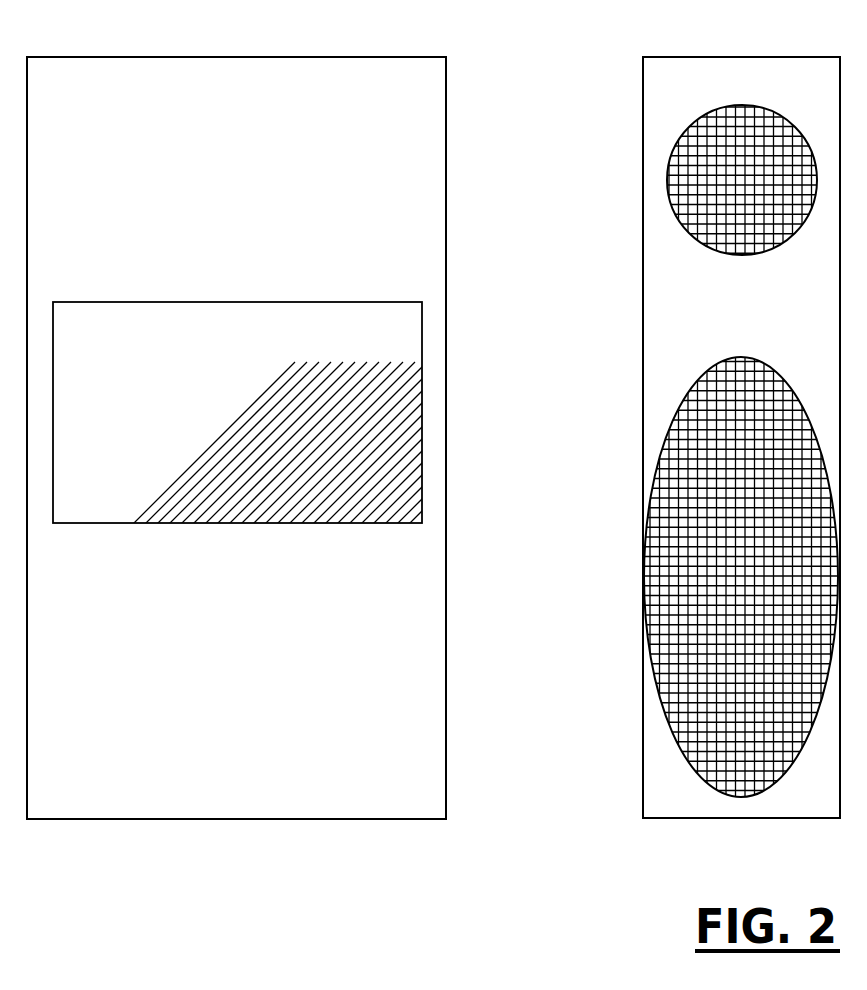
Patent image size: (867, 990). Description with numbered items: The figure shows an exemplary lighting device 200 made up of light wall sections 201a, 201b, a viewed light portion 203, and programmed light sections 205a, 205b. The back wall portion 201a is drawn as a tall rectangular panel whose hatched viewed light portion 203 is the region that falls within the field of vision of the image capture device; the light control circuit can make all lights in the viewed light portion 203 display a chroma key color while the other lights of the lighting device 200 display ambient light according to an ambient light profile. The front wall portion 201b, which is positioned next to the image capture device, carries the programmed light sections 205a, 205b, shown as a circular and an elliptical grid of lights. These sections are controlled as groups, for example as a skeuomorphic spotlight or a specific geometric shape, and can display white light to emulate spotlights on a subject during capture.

The lighting device 200 is at (568, 38).
The back wall portion 201a is at (237, 57).
The front wall portion 201b is at (741, 57).
The viewed light portion 203 is at (235, 302).
The programmed light section 205a is at (668, 182).
The programmed light section 205b is at (737, 357).